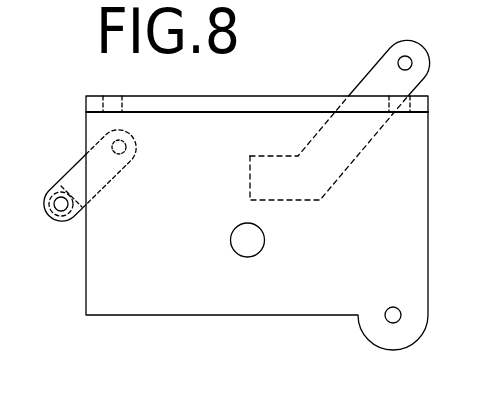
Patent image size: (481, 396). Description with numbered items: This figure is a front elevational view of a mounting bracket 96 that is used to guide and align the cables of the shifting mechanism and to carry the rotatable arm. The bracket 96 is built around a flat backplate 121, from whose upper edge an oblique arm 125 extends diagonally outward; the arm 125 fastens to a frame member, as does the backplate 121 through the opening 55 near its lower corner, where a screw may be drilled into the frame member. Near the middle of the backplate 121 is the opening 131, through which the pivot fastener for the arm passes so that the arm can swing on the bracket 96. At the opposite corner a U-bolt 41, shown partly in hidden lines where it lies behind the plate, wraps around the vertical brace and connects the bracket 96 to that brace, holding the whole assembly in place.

The bracket 96 is at (215, 90).
The backplate 121 is at (145, 267).
The oblique arm 125 is at (373, 82).
The U-bolt 41 is at (74, 181).
The opening 131 is at (252, 242).
The opening 55 is at (392, 308).